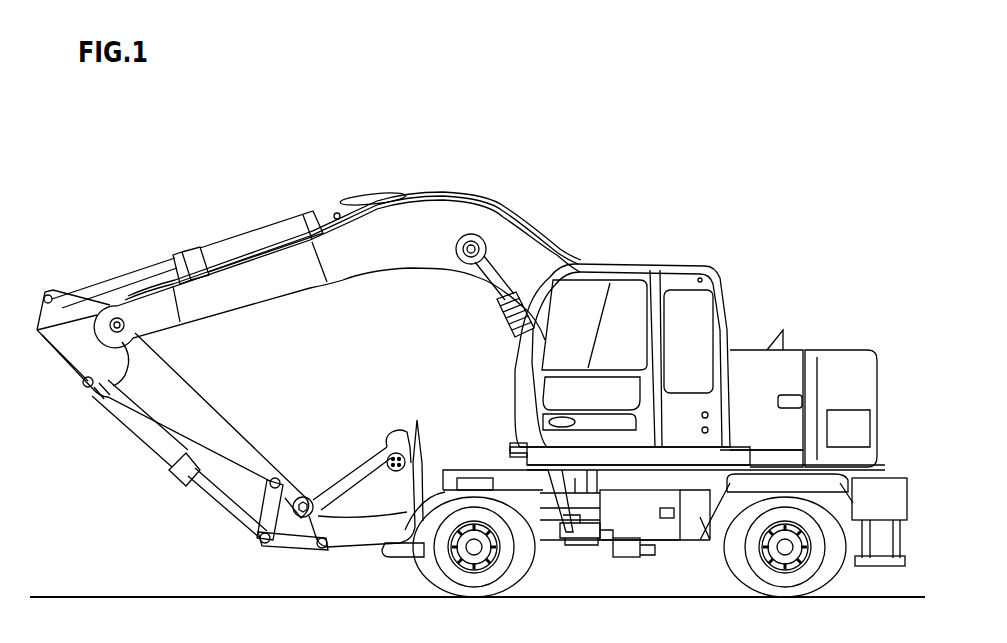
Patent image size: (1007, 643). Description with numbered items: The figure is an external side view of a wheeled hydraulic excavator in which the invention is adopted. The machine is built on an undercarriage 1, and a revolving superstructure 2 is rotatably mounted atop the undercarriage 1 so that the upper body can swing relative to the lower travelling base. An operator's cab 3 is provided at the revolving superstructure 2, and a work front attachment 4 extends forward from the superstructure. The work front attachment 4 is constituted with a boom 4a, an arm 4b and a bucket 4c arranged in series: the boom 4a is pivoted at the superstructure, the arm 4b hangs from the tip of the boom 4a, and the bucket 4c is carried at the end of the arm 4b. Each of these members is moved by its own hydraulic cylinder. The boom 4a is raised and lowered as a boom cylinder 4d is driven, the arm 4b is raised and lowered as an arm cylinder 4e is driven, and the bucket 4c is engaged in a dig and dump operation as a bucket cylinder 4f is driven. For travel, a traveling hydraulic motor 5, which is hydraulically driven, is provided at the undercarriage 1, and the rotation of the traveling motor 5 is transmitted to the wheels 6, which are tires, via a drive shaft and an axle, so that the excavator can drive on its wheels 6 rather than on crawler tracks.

The undercarriage 1 is at (905, 539).
The revolving superstructure 2 is at (810, 350).
The operator's cab 3 is at (650, 262).
The work front attachment 4 is at (443, 203).
The boom 4a is at (376, 270).
The arm 4b is at (203, 401).
The bucket 4c is at (354, 477).
The boom cylinder 4d is at (502, 300).
The arm cylinder 4e is at (200, 250).
The bucket cylinder 4f is at (167, 457).
The traveling hydraulic motor 5 is at (606, 550).
The wheels 6 is at (415, 580).